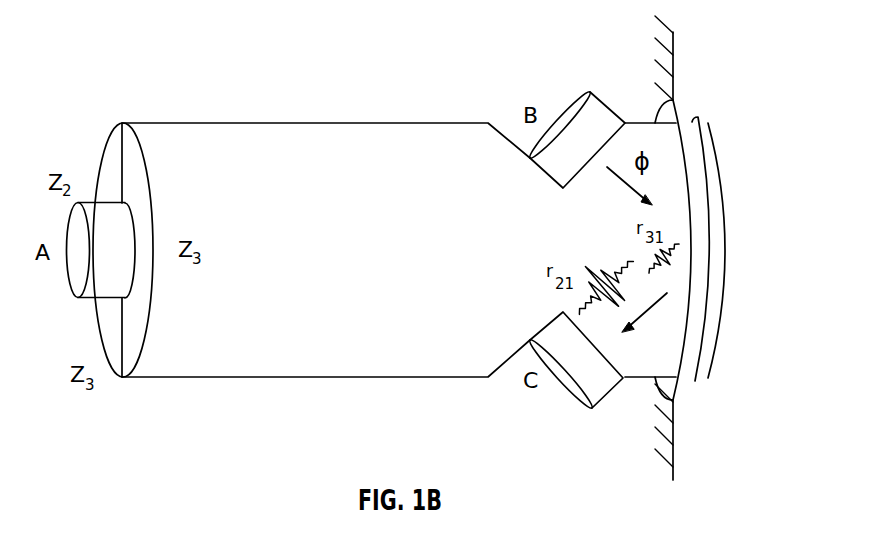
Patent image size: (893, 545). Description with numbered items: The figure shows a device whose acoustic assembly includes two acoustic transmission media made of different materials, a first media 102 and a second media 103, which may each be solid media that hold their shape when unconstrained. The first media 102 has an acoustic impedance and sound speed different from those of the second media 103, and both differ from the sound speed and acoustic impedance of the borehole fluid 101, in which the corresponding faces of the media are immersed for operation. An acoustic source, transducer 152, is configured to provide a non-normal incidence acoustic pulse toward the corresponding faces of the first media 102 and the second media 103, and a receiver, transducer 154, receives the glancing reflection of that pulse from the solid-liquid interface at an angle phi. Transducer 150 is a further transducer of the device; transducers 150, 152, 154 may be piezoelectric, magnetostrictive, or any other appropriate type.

The borehole fluid 101 is at (766, 253).
The first media 102 is at (351, 229).
The second media 103 is at (143, 138).
The transducer 150 is at (85, 268).
The transducer 152 is at (562, 120).
The transducer 154 is at (563, 383).